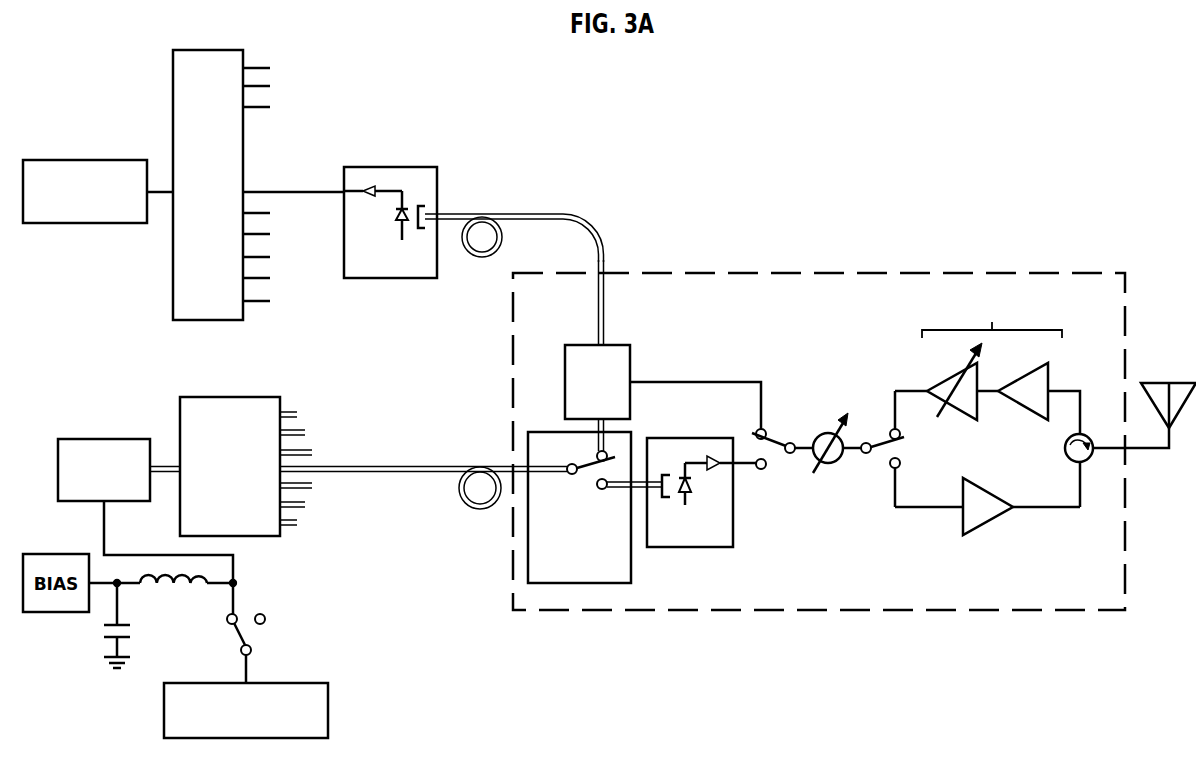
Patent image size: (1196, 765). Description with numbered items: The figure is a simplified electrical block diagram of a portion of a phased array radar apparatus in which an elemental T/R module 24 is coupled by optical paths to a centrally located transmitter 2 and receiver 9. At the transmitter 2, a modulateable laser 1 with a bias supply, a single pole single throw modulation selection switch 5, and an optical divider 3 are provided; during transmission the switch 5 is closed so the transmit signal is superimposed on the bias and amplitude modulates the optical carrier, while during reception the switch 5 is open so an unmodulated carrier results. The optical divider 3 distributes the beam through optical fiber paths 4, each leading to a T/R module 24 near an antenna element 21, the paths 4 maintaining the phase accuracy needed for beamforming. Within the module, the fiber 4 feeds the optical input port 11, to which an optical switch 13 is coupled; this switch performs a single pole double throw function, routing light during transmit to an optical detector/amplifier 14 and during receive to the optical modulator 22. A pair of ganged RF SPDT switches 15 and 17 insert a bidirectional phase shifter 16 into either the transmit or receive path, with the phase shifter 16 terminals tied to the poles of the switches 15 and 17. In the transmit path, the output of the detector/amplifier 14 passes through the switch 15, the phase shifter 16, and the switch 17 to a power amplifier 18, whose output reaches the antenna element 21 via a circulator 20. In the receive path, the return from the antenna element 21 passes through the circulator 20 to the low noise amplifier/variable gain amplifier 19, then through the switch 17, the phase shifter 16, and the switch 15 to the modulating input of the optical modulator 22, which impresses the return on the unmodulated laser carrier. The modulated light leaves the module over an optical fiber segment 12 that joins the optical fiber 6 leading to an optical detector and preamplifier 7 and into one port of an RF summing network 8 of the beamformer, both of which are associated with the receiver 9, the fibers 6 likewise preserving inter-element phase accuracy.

The modulateable laser 1 is at (106, 438).
The transmitter 2 is at (330, 710).
The optical divider 3 is at (233, 397).
The optical fiber paths 4 is at (384, 466).
The modulation selection switch 5 is at (259, 641).
The optical fiber 6 is at (456, 214).
The optical detector and preamplifier 7 is at (399, 167).
The RF summing network 8 is at (172, 298).
The receiver 9 is at (82, 159).
The optical input port 11 is at (504, 464).
The optical fiber 12 is at (607, 267).
The optical switch 13 is at (633, 572).
The optical detector/amplifier 14 is at (690, 548).
The first RF SPDT switch 15 is at (779, 434).
The bidirectional phase shifter 16 is at (831, 466).
The second RF SPDT switch 17 is at (880, 433).
The power amplifier 18 is at (995, 519).
The low noise amplifier/variable gain amplifier 19 is at (987, 365).
The circulator 20 is at (1063, 450).
The antenna element 21 is at (1156, 378).
The optical modulator 22 is at (634, 354).
The T/R module 24 is at (839, 614).